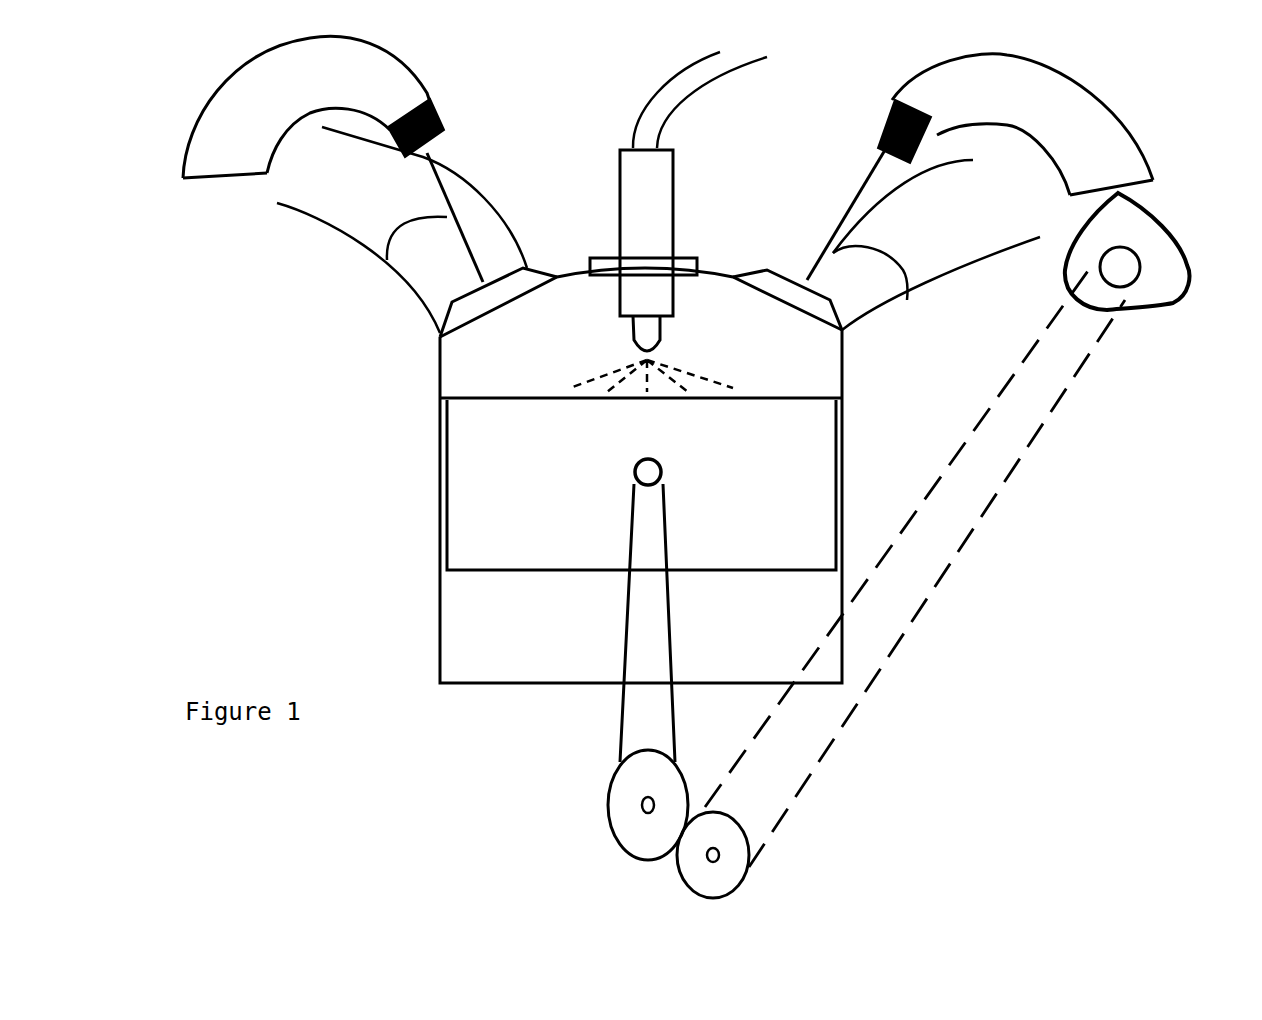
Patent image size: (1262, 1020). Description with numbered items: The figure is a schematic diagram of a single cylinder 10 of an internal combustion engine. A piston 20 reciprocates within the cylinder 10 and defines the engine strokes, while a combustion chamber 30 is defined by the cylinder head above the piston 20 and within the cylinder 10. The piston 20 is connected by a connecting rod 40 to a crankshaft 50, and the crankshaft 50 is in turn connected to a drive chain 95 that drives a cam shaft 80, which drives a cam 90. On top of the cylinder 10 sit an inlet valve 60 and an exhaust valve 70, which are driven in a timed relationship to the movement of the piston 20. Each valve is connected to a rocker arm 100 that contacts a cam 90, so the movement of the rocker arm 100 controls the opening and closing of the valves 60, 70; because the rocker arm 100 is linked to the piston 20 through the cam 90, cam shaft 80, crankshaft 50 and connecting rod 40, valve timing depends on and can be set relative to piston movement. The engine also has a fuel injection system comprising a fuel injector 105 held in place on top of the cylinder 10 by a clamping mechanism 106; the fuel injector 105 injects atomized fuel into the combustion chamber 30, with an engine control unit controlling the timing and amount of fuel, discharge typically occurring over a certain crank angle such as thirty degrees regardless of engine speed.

The cylinder 10 is at (559, 475).
The piston 20 is at (676, 485).
The combustion chamber 30 is at (602, 366).
The connecting rod 40 is at (607, 610).
The crankshaft 50 is at (648, 840).
The inlet valve 60 is at (923, 215).
The exhaust valve 70 is at (402, 216).
The cam shaft 80 is at (1155, 324).
The cam 90 is at (1157, 251).
The drive chain 95 is at (915, 567).
The rocker arm 100 is at (630, 118).
The fuel injector 105 is at (693, 201).
The clamping mechanism 106 is at (680, 238).